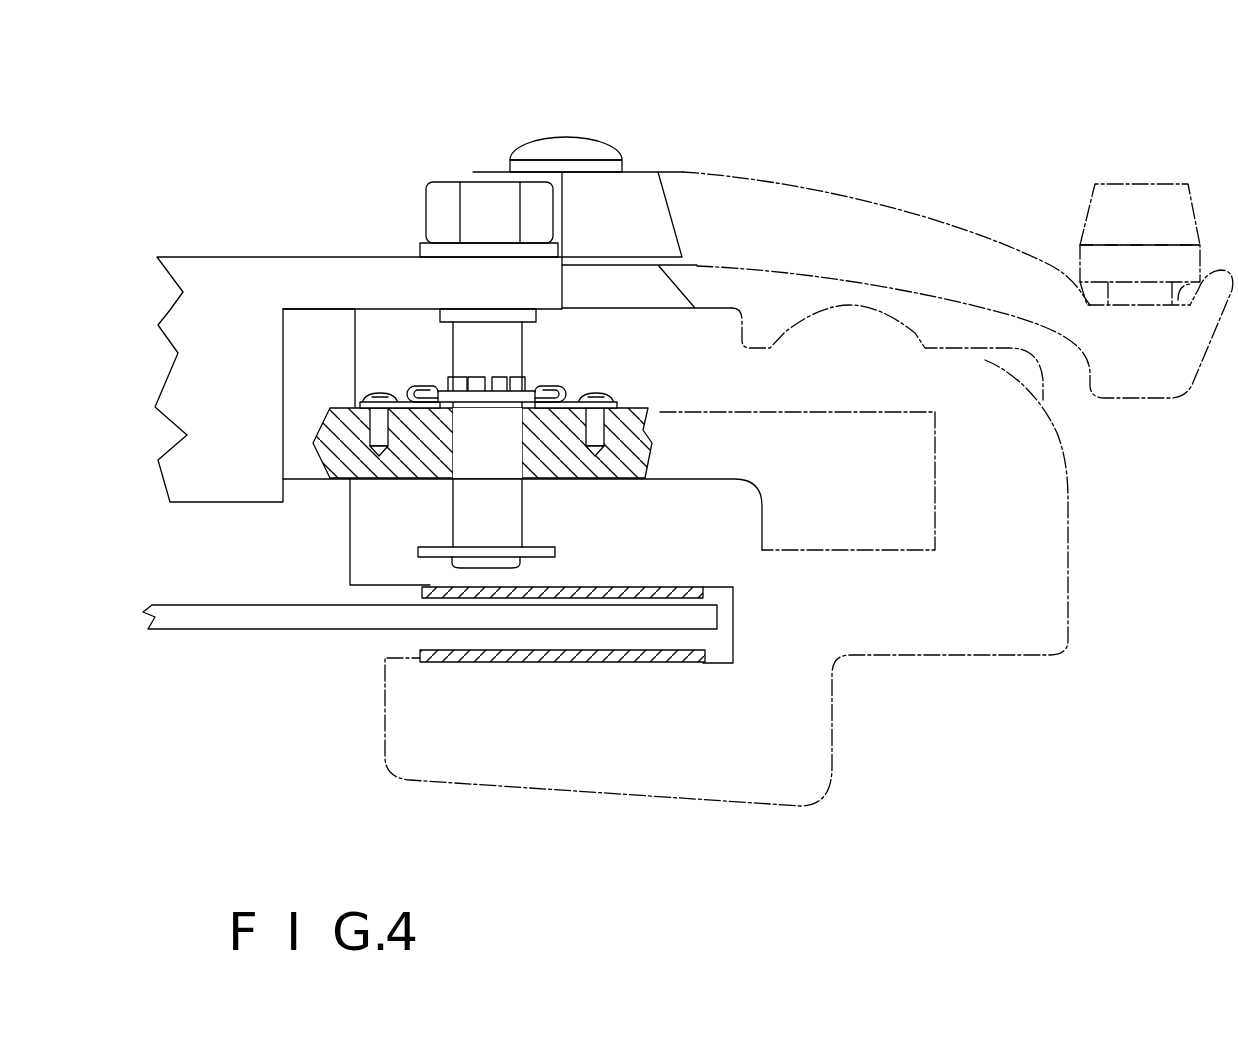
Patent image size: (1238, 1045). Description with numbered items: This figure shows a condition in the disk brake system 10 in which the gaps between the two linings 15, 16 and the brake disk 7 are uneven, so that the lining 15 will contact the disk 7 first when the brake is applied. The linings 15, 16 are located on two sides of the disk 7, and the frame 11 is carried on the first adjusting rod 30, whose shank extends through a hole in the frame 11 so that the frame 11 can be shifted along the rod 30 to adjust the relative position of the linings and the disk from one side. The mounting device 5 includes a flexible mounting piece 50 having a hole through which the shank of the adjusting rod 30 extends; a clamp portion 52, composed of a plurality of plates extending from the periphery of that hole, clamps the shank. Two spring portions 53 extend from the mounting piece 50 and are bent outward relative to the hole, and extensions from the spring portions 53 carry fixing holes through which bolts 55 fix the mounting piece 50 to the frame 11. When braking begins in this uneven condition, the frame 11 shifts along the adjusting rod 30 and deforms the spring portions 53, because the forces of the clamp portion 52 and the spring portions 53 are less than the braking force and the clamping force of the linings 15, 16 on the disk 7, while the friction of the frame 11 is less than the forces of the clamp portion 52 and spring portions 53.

The mounting device 5 is at (268, 118).
The brake disk 7 is at (200, 608).
The disk brake system 10 is at (1104, 532).
The frame 11 is at (628, 440).
The lining 15 is at (432, 590).
The lining 16 is at (422, 652).
The first adjusting rod 30 is at (508, 492).
The mounting piece 50 is at (526, 396).
The clamp portion 52 is at (478, 375).
The spring portion 53 is at (420, 382).
The bolt 55 is at (370, 395).